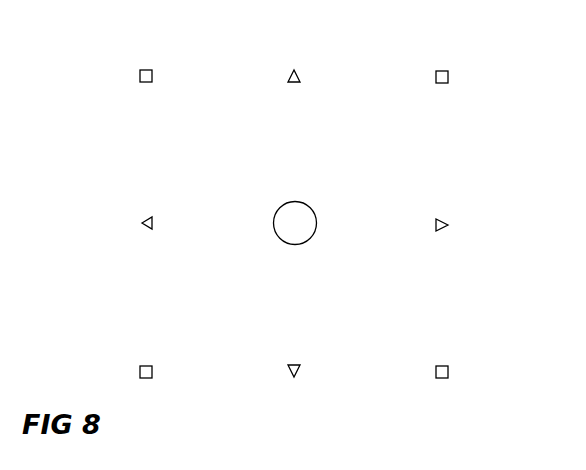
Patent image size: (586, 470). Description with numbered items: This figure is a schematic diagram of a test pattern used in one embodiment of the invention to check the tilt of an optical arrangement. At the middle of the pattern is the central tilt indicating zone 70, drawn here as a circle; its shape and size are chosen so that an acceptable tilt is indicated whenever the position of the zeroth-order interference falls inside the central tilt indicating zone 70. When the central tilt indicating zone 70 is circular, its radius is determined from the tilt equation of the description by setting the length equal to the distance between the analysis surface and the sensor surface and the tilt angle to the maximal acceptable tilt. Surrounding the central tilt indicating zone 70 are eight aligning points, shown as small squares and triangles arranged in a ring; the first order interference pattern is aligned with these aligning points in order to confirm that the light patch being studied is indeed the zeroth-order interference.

The central tilt indicating zone 70 is at (305, 215).